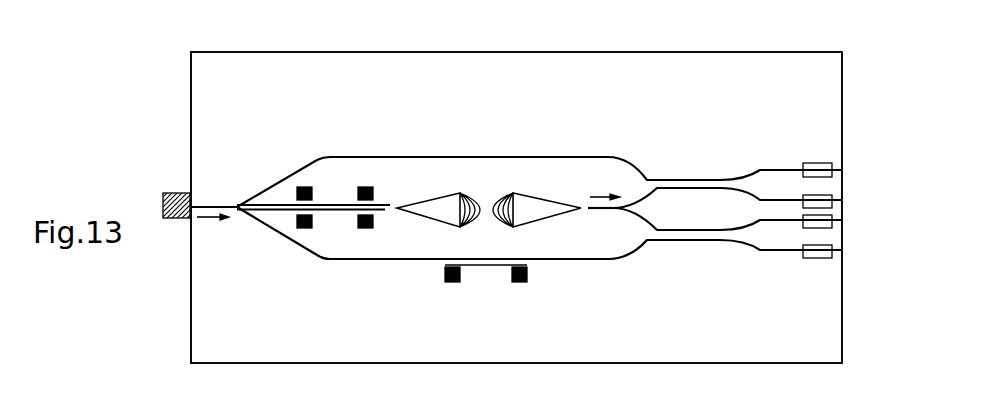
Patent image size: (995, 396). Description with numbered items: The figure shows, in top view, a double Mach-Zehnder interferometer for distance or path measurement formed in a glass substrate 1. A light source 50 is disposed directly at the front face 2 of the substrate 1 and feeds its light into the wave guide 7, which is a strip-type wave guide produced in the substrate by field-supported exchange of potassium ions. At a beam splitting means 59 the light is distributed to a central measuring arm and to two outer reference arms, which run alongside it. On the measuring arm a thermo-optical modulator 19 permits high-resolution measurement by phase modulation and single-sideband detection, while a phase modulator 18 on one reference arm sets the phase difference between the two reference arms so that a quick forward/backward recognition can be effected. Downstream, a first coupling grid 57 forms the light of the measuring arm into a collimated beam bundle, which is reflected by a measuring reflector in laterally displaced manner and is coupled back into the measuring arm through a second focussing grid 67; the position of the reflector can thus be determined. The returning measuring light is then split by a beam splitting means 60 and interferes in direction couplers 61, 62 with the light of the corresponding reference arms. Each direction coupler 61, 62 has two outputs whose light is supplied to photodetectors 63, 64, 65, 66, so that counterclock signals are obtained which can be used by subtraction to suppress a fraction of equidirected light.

The glass substrate 1 is at (632, 50).
The front face 2 is at (190, 80).
The wave guide 7 is at (216, 200).
The light source 50 is at (172, 222).
The beam splitting means 59 is at (237, 215).
The thermo-optical modulator 19 is at (363, 230).
The first coupling grid 57 is at (472, 190).
The second focussing grid 67 is at (505, 190).
The phase modulator 18 is at (523, 286).
The beam splitting means 60 is at (607, 215).
The direction coupler 61 is at (688, 176).
The direction coupler 62 is at (692, 246).
The photodetector 63 is at (832, 153).
The photodetector 64 is at (830, 188).
The photodetector 65 is at (830, 232).
The photodetector 66 is at (828, 265).